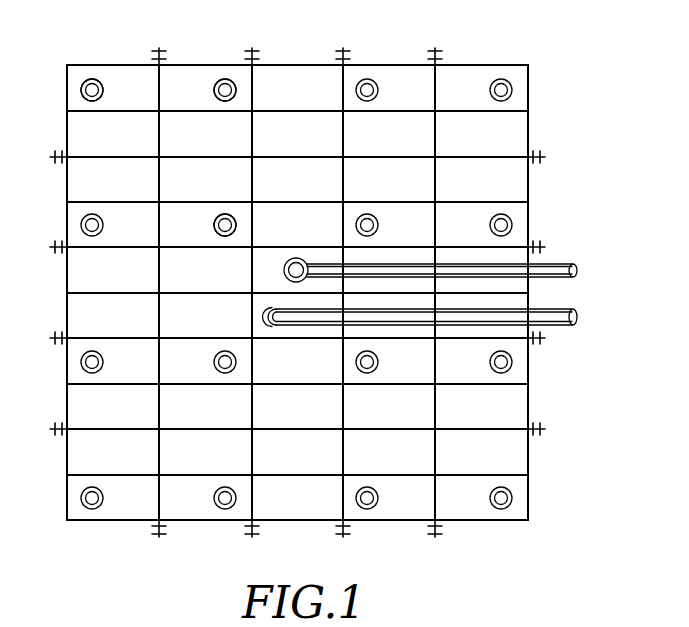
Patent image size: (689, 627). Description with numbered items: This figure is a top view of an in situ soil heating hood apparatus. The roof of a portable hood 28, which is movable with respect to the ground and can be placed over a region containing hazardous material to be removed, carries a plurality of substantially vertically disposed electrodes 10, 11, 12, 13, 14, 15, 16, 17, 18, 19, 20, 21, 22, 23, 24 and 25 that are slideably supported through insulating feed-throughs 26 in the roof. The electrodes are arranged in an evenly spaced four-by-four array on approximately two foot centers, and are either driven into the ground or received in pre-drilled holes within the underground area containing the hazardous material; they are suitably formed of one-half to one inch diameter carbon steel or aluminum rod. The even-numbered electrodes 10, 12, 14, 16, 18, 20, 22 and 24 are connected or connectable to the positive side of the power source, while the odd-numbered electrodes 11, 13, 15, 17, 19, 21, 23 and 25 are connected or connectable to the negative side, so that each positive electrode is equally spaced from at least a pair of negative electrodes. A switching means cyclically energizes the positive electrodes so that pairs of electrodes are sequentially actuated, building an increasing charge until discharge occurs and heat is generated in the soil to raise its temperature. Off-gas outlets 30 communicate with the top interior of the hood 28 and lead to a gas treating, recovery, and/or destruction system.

The electrode 10 is at (512, 90).
The electrode 11 is at (512, 225).
The electrode 12 is at (512, 362).
The electrode 13 is at (510, 507).
The electrode 14 is at (373, 509).
The electrode 15 is at (412, 370).
The electrode 16 is at (410, 233).
The electrode 17 is at (378, 79).
The electrode 18 is at (228, 79).
The electrode 19 is at (213, 226).
The electrode 20 is at (216, 366).
The electrode 21 is at (228, 510).
The electrode 22 is at (95, 510).
The electrode 23 is at (103, 368).
The electrode 24 is at (103, 232).
The electrode 25 is at (96, 79).
The insulating feed-through 26 is at (100, 97).
The portable hood 28 is at (528, 455).
The off-gas outlet 30 is at (545, 309).